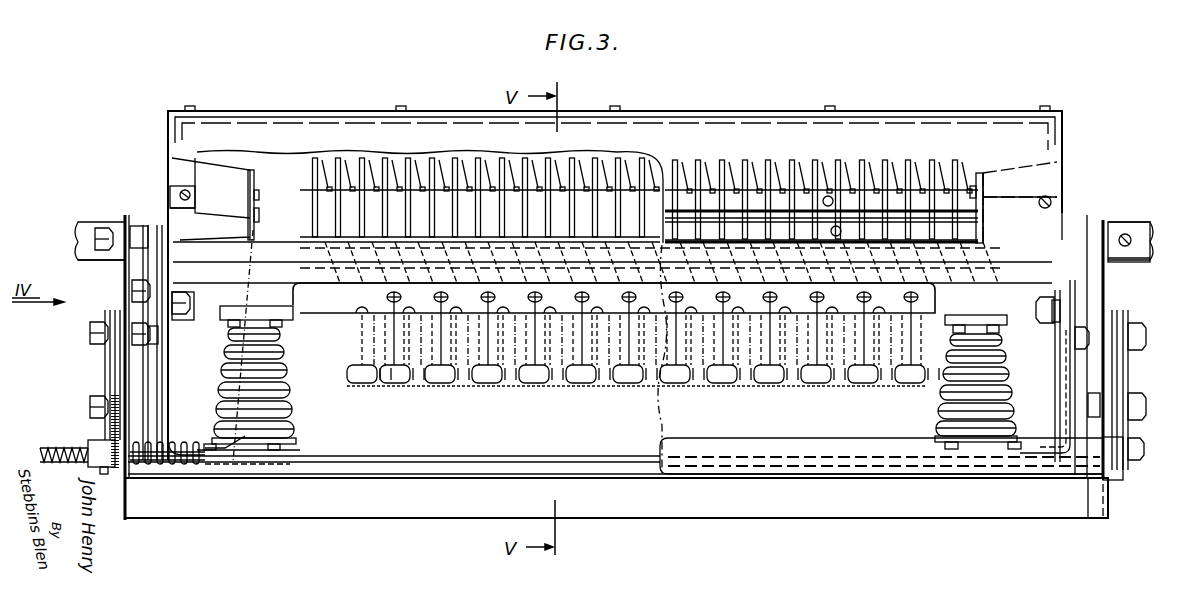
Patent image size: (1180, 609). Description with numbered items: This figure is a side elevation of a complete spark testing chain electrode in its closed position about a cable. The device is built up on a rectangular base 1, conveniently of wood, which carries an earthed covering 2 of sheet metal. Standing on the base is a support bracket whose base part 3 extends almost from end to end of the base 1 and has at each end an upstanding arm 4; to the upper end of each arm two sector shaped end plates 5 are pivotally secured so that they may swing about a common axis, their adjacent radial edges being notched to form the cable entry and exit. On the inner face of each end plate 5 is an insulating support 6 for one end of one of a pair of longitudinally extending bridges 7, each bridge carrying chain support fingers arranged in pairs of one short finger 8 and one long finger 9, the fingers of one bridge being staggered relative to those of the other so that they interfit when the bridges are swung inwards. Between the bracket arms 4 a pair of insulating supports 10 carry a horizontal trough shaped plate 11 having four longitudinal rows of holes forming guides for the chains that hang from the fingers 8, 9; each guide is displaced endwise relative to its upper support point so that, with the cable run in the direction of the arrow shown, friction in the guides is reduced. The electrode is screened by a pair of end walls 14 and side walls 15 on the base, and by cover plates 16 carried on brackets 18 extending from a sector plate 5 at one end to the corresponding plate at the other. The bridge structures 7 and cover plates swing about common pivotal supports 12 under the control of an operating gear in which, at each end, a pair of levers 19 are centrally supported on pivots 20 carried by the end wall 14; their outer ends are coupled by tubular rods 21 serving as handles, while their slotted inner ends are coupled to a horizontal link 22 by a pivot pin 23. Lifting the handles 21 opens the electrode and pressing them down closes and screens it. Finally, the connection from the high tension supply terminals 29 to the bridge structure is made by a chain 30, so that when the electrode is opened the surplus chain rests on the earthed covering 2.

The rectangular base 1 is at (515, 512).
The covering of sheet metal 2 is at (467, 470).
The base part 3 is at (387, 458).
The upstanding arm 4 is at (163, 392).
The sector shaped end plate 5 is at (167, 146).
The insulating support 6 is at (1012, 158).
The bridge 7 is at (258, 196).
The short finger 8 is at (322, 190).
The long finger 9 is at (312, 195).
The insulating support 10 is at (276, 384).
The trough shaped plate 11 is at (312, 289).
The pivotal support 12 is at (190, 306).
The end wall 14 is at (124, 282).
The side wall 15 is at (668, 396).
The cover plate 16 is at (432, 305).
The bracket 18 is at (283, 122).
The lever 19 is at (115, 360).
The pivot 20 is at (95, 405).
The tubular rod 21 is at (770, 448).
The horizontal link 22 is at (150, 340).
The pivot pin 23 is at (132, 338).
The H. T. supply terminals 29 is at (280, 444).
The chain 30 is at (251, 293).